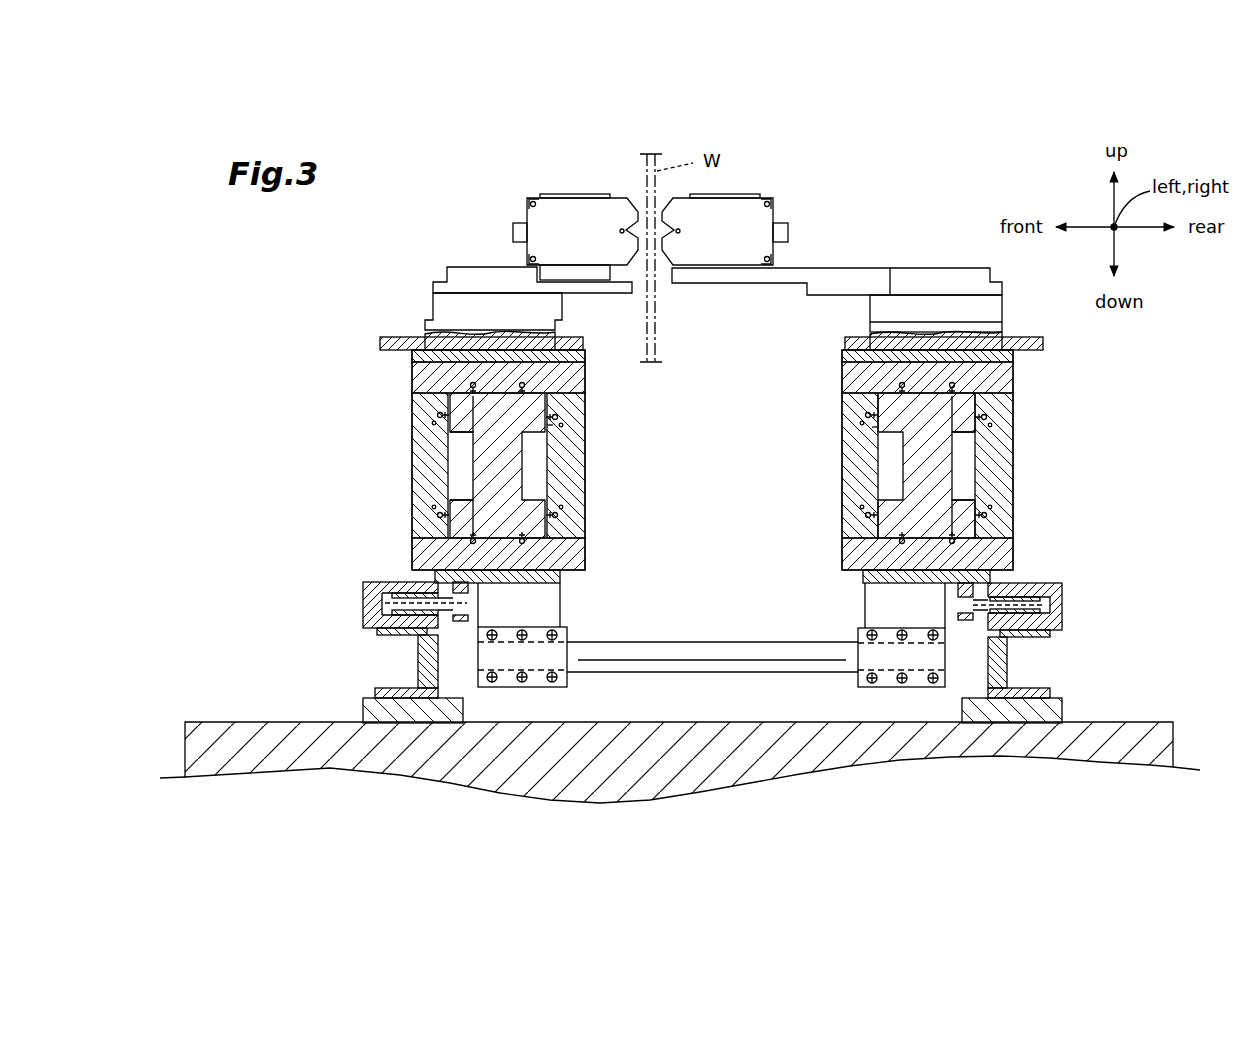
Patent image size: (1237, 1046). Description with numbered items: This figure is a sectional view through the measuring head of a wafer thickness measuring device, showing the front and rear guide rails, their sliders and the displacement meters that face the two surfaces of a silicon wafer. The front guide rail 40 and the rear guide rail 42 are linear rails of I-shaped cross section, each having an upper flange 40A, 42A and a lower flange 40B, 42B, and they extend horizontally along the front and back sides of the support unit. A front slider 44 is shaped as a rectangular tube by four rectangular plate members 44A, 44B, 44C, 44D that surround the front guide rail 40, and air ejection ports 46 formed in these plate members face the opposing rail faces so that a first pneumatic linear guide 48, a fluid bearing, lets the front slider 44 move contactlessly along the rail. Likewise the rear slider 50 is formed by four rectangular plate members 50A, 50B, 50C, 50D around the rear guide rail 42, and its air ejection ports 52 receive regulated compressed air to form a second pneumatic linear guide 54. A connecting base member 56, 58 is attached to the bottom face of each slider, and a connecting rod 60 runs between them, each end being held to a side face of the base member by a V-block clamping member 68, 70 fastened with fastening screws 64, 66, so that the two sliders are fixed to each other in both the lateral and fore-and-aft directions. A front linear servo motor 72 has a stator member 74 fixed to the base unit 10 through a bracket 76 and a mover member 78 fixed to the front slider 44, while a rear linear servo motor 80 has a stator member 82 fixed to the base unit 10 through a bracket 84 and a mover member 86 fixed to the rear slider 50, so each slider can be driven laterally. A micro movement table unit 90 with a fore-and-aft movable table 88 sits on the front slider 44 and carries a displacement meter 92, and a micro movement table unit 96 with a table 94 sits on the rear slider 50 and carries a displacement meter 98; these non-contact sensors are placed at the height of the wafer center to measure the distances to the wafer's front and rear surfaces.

The base unit 10 is at (1135, 722).
The front guide rail 40 is at (486, 458).
The upper flange 40A is at (460, 413).
The lower flange 40B is at (463, 512).
The rear guide rail 42 is at (938, 460).
The upper flange 42A is at (963, 413).
The lower flange 42B is at (963, 510).
The front slider 44 is at (424, 452).
The rectangular plate member 44A is at (413, 373).
The rectangular plate member 44B is at (440, 492).
The rectangular plate member 44C is at (415, 560).
The rectangular plate member 44D is at (580, 475).
The air ejection ports 46 is at (438, 414).
The first pneumatic linear guide 48 is at (552, 428).
The rear slider 50 is at (1003, 452).
The rectangular plate member 50A is at (1012, 373).
The rectangular plate member 50B is at (1006, 473).
The rectangular plate member 50C is at (1006, 560).
The rectangular plate member 50D is at (843, 477).
The air ejection ports 52 is at (866, 414).
The second pneumatic linear guide 54 is at (876, 428).
The connecting base member 56 is at (553, 576).
The connecting base member 58 is at (866, 576).
The connecting rod 60 is at (790, 652).
The fastening screws 64 is at (485, 643).
The fastening screws 66 is at (933, 642).
The V-block clamping member 68 is at (537, 682).
The V-block clamping member 70 is at (887, 683).
The front linear servo motor 72 is at (360, 586).
The stator member 74 is at (366, 608).
The bracket 76 is at (419, 662).
The mover member 78 is at (378, 632).
The rear linear servo motor 80 is at (1066, 586).
The stator member 82 is at (1062, 608).
The bracket 84 is at (1004, 663).
The mover member 86 is at (1043, 605).
The table 88 is at (483, 272).
The micro movement table unit 90 is at (444, 308).
The displacement meter 92 is at (572, 208).
The table 94 is at (915, 275).
The micro movement table unit 96 is at (982, 309).
The displacement meter 98 is at (730, 208).